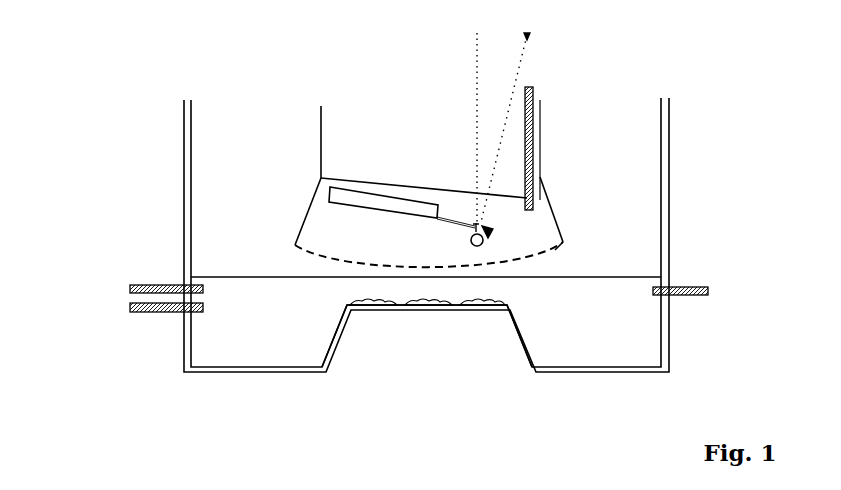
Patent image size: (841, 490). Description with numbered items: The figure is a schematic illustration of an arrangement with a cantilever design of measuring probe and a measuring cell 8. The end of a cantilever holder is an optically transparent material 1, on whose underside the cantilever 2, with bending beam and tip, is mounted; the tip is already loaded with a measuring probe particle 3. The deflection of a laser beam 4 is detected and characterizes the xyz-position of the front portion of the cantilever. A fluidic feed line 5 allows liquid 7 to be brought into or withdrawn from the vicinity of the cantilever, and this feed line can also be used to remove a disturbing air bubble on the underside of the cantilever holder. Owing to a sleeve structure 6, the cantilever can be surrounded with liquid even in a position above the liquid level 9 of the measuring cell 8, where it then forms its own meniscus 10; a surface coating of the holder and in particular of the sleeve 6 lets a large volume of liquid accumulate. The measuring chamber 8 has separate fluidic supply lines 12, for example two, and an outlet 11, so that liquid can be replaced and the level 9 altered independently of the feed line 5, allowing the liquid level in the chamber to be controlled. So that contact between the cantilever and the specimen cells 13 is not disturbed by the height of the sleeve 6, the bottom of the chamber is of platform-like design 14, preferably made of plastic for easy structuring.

The optically transparent material 1 is at (333, 140).
The cantilever 2 is at (383, 195).
The measuring probe particle 3 is at (490, 243).
The laser beam 4 is at (498, 85).
The fluidic feed line 5 is at (530, 86).
The sleeve structure 6 is at (313, 178).
The liquid 7 is at (337, 237).
The measuring cell 8 is at (668, 109).
The liquid level 9 is at (220, 277).
The meniscus 10 is at (543, 258).
The outlet 11 is at (708, 288).
The fluidic supply lines 12 is at (140, 295).
The specimen cells 13 is at (438, 308).
The platform-like design 14 is at (342, 328).